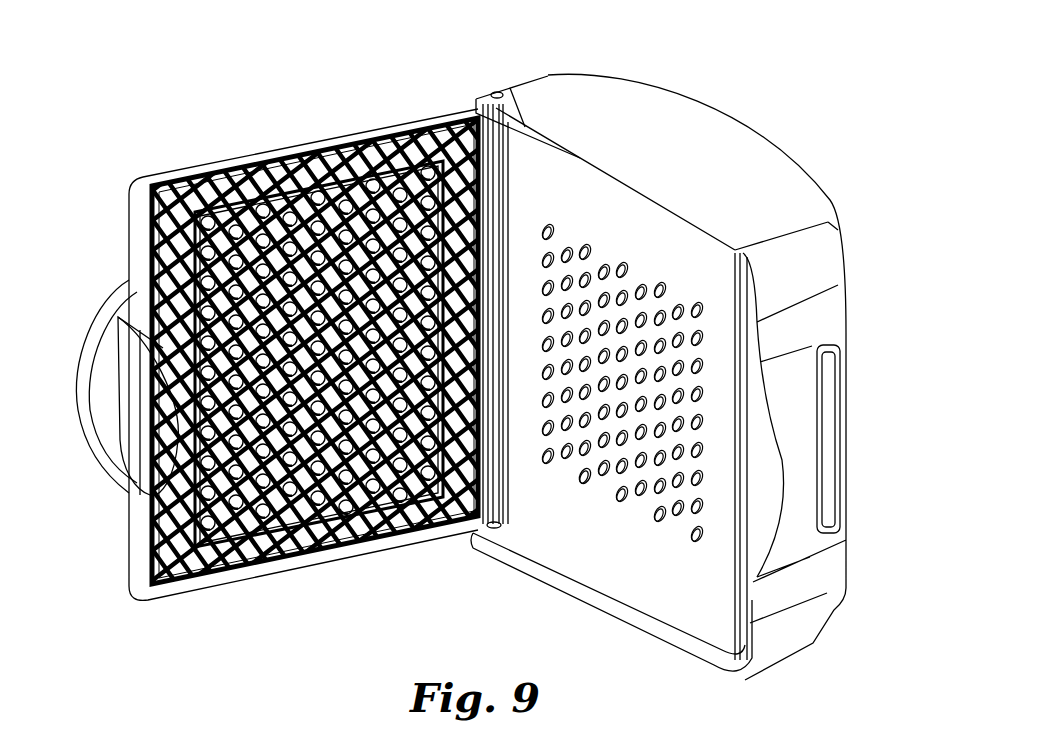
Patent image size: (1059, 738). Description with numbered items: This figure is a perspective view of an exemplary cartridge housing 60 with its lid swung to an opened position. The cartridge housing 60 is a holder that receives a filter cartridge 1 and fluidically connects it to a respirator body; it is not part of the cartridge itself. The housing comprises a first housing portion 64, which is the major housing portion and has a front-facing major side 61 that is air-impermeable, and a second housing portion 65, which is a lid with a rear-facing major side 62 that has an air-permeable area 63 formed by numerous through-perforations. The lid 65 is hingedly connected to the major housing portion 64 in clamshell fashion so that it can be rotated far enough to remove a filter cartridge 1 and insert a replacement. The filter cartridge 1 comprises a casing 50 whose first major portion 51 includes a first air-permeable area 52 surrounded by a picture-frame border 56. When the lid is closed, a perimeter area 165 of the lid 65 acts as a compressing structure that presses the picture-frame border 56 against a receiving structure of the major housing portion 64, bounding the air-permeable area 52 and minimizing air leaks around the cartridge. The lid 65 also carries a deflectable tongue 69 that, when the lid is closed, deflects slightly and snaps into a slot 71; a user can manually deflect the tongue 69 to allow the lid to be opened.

The cartridge housing 60 is at (172, 82).
The second housing portion 65 is at (128, 199).
The rear side 62 is at (97, 223).
The perimeter area 165 is at (266, 186).
The air-permeable area 63 is at (348, 553).
The deflectable tongue 69 is at (147, 437).
The front side 61 is at (775, 113).
The first housing portion 64 is at (623, 78).
The filter cartridge 1 is at (641, 573).
The picture-frame border 56 is at (548, 172).
The first major portion 51 is at (705, 250).
The casing 50 is at (527, 522).
The first air-permeable area 52 is at (583, 483).
The slot 71 is at (830, 437).